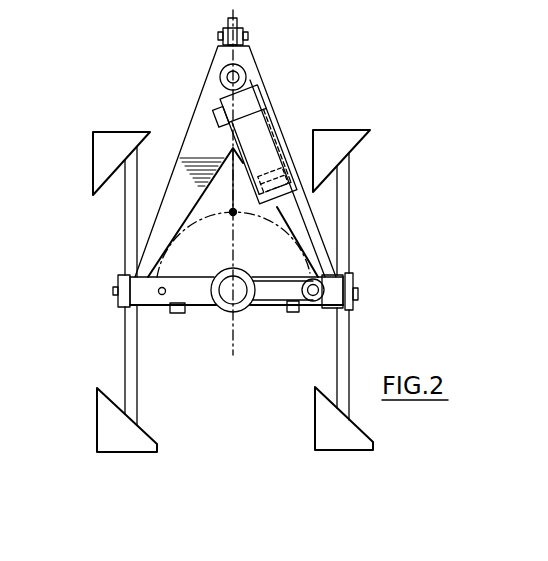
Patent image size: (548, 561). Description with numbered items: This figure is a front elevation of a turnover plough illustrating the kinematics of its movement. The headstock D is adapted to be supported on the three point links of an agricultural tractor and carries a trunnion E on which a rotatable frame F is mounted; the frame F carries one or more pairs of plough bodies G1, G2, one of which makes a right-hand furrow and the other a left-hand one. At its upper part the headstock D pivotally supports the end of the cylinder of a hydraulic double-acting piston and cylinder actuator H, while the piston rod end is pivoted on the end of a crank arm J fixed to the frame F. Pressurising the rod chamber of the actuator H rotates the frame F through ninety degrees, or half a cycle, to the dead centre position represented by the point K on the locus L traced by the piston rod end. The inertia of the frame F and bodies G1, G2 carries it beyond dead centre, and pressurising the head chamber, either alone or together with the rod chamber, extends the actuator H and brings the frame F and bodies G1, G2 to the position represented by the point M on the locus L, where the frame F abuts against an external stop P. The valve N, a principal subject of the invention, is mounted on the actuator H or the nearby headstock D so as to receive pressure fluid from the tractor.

The plough body G1 is at (110, 137).
The plough body G2 is at (343, 137).
The rotatable frame F is at (128, 360).
The valve N is at (203, 88).
The headstock D is at (190, 132).
The hydraulic double-acting piston and cylinder actuator H is at (254, 103).
The dead centre point K is at (236, 215).
The locus of the piston rod end L is at (201, 221).
The trunnion E is at (221, 313).
The crank arm J is at (266, 302).
The end position point M is at (160, 296).
The external stop P is at (179, 314).